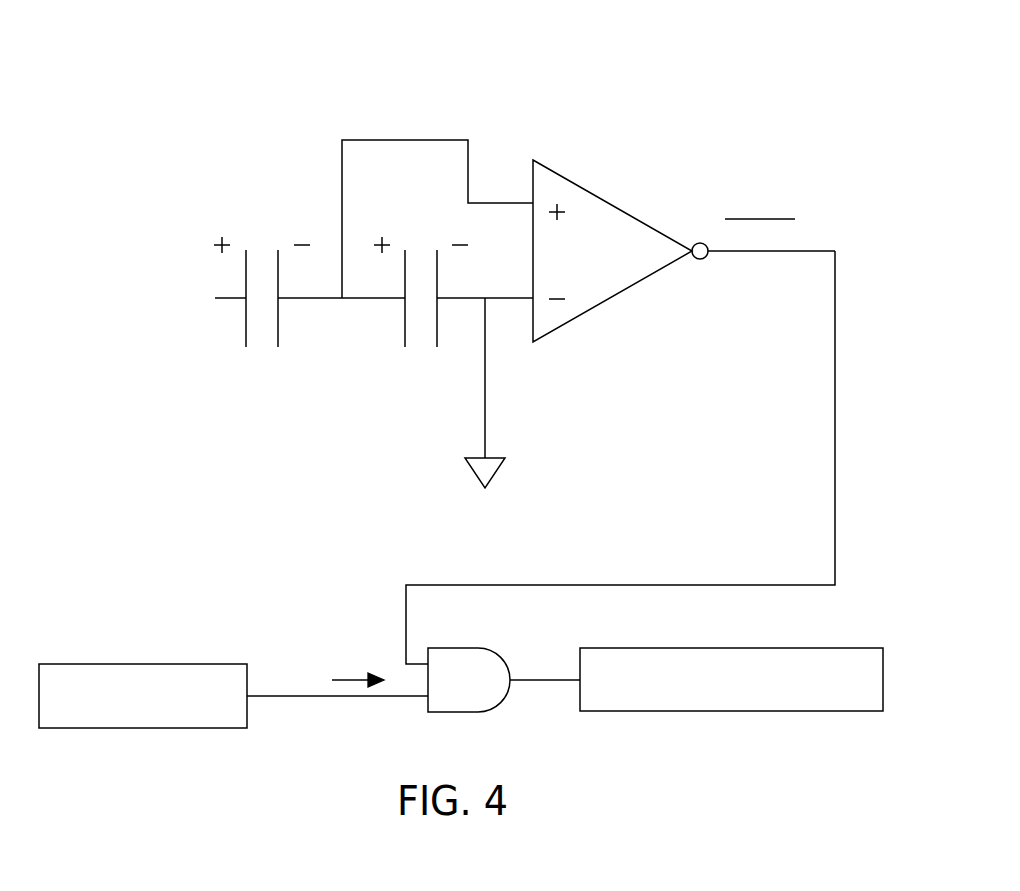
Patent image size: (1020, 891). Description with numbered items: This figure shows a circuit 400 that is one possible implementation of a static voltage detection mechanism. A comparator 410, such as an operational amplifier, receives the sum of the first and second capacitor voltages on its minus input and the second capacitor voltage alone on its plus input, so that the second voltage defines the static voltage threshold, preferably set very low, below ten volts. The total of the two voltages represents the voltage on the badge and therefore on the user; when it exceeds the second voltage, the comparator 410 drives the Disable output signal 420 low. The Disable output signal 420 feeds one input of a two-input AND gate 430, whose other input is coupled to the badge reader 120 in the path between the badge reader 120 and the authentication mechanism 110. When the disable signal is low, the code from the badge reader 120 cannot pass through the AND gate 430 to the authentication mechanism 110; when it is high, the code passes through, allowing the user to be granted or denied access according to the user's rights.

The circuit 400 is at (811, 84).
The comparator 410 is at (610, 203).
The Disable output signal 420 is at (680, 585).
The AND gate 430 is at (458, 648).
The badge reader 120 is at (203, 664).
The authentication mechanism 110 is at (855, 648).